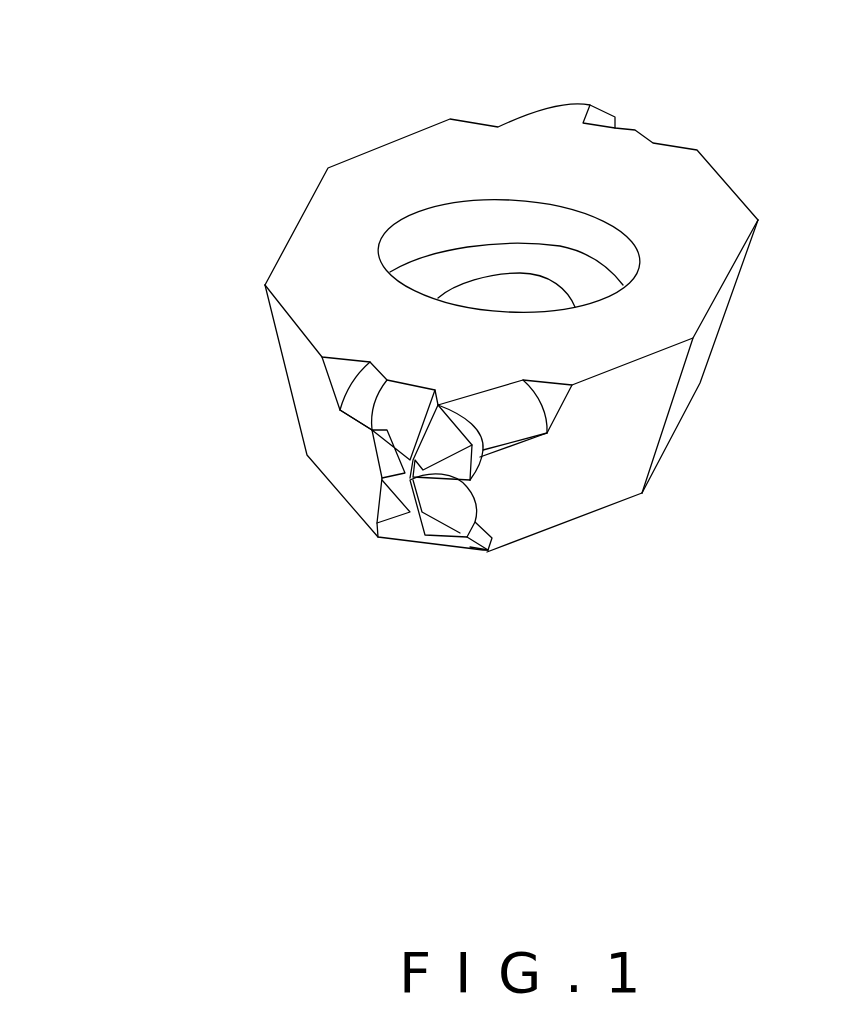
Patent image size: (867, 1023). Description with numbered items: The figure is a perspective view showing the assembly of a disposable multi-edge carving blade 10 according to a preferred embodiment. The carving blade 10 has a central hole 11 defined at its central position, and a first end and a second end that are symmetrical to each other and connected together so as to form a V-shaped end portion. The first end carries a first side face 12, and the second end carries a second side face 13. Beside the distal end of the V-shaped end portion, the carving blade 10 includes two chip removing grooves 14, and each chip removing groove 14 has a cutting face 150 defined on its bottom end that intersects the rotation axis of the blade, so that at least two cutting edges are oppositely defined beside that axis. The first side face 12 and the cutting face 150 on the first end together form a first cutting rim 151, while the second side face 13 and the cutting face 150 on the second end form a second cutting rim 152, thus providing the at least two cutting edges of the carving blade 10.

The disposable multi-edge carving blade 10 is at (715, 213).
The central hole 11 is at (453, 227).
The first side face 12 is at (593, 450).
The second side face 13 is at (333, 472).
The chip removing groove 14 is at (398, 425).
The cutting face 150 is at (417, 410).
The first cutting rim 151 is at (490, 550).
The second cutting rim 152 is at (345, 443).